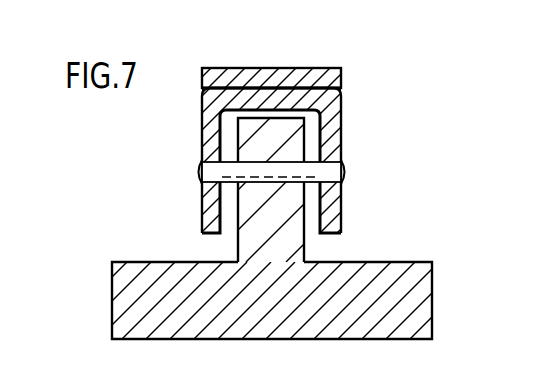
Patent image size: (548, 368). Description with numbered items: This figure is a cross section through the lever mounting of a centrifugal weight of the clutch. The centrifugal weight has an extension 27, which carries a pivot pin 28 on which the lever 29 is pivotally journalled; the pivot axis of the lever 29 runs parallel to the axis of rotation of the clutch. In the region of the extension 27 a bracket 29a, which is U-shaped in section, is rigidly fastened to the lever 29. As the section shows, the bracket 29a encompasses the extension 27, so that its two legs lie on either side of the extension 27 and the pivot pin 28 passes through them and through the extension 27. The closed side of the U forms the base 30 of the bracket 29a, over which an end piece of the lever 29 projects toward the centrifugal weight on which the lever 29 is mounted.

The extension 27 is at (270, 247).
The pivot pin 28 is at (312, 170).
The lever 29 is at (229, 66).
The bracket 29a is at (347, 108).
The base of bracket 30 is at (260, 97).